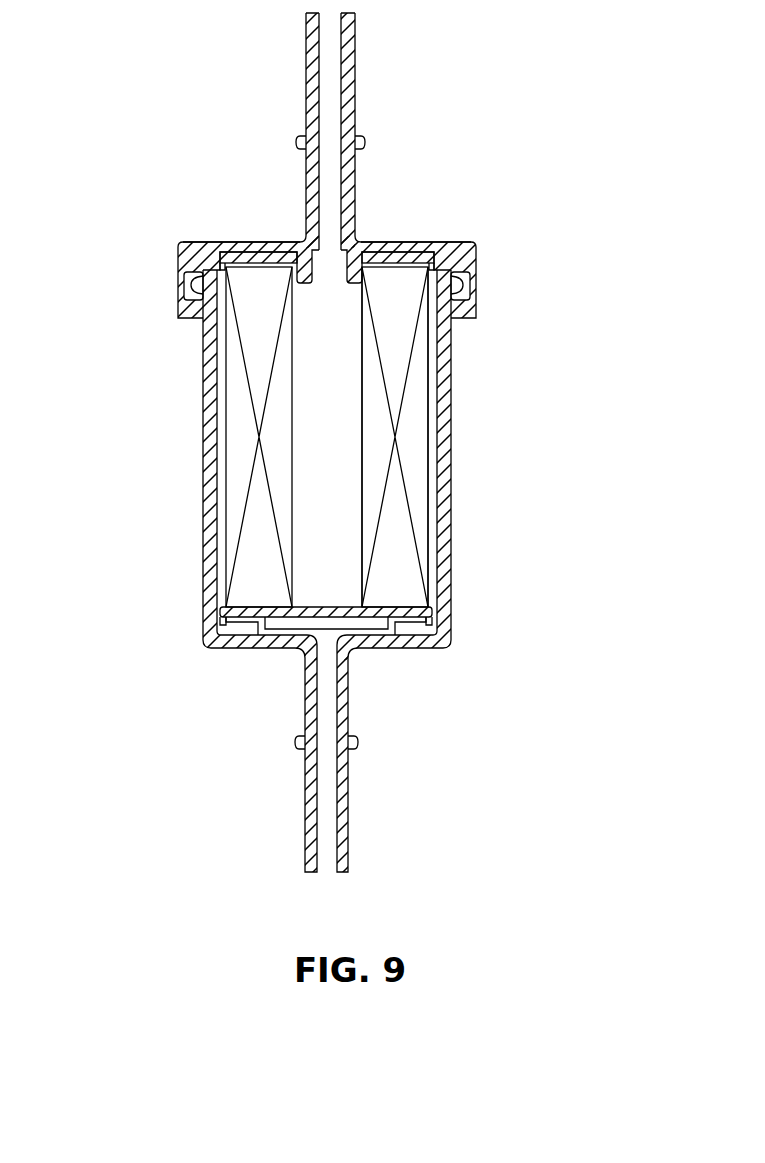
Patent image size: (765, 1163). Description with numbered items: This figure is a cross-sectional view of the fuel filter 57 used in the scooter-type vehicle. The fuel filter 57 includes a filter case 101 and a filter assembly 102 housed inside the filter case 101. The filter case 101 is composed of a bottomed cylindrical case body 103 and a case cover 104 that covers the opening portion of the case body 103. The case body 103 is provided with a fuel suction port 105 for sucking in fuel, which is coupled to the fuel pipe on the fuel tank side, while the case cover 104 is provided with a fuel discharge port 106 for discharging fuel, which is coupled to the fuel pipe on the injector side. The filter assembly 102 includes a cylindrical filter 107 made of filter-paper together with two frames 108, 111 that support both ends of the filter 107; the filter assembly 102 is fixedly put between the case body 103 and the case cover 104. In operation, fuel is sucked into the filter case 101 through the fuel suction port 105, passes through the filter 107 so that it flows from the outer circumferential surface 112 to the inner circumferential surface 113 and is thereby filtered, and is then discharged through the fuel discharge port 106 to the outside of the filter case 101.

The fuel filter 57 is at (520, 123).
The filter case 101 is at (194, 512).
The filter assembly 102 is at (432, 640).
The case body 103 is at (203, 433).
The case cover 104 is at (203, 250).
The fuel suction port 105 is at (310, 807).
The fuel discharge port 106 is at (305, 92).
The filter 107 is at (452, 467).
The frame 108 is at (356, 624).
The frame 111 is at (401, 258).
The outer circumferential surface 112 is at (428, 567).
The inner circumferential surface 113 is at (363, 396).